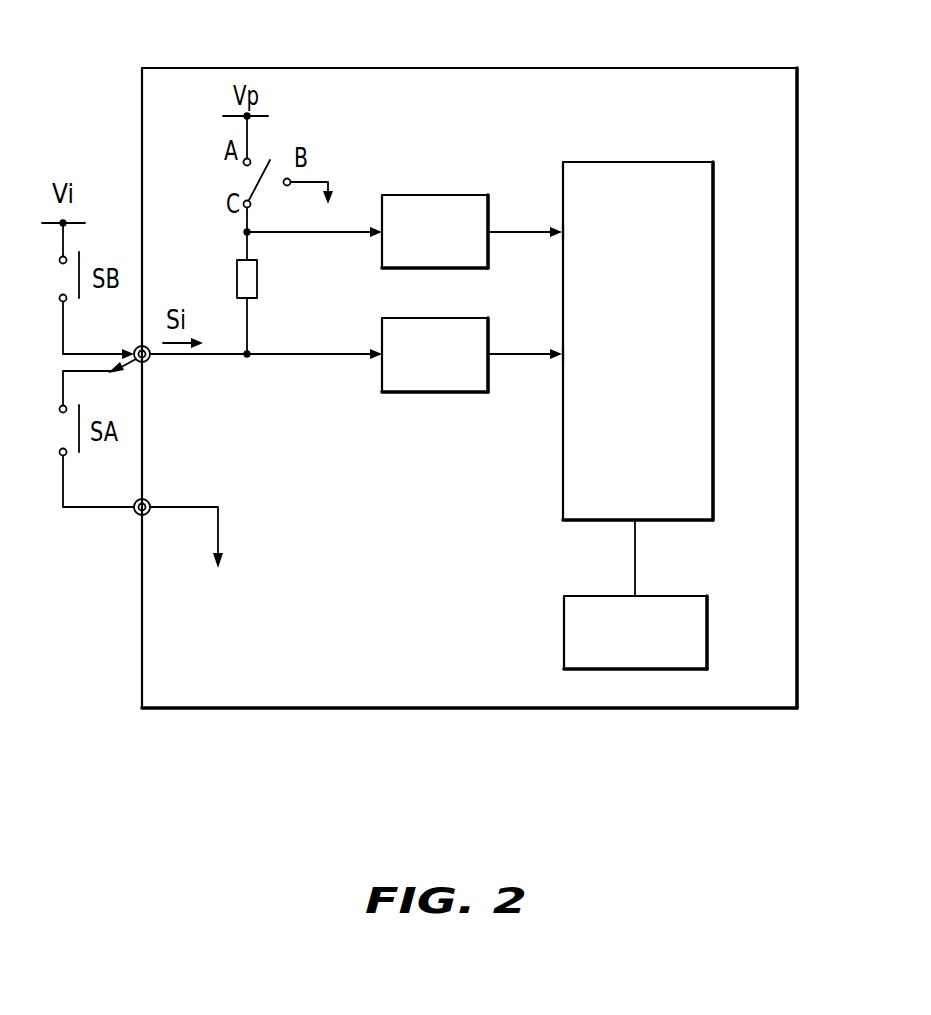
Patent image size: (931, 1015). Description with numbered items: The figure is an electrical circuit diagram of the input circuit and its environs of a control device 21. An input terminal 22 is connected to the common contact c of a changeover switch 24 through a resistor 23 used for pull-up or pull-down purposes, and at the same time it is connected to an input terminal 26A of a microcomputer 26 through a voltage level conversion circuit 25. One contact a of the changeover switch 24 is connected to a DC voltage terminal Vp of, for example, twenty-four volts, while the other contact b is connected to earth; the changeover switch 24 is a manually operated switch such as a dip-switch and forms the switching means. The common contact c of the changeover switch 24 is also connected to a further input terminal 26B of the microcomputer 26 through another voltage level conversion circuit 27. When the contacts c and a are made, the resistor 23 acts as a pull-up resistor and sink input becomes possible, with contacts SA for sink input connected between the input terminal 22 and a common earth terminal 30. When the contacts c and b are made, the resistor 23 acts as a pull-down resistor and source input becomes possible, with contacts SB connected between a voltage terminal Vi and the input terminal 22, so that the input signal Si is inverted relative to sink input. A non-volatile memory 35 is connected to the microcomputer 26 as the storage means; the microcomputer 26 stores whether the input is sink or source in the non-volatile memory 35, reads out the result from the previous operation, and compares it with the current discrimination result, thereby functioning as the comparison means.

The control device 21 is at (562, 68).
The input terminal 22 is at (147, 362).
The resistor 23 is at (257, 280).
The changeover switch 24 is at (248, 189).
The voltage level conversion circuit 25 is at (450, 392).
The microcomputer 26 is at (660, 162).
The input terminal of microcomputer 26A is at (561, 362).
The input terminal of microcomputer 26B is at (561, 227).
The voltage level conversion circuit 27 is at (445, 195).
The common earth terminal 30 is at (139, 516).
The non-volatile memory 35 is at (707, 622).